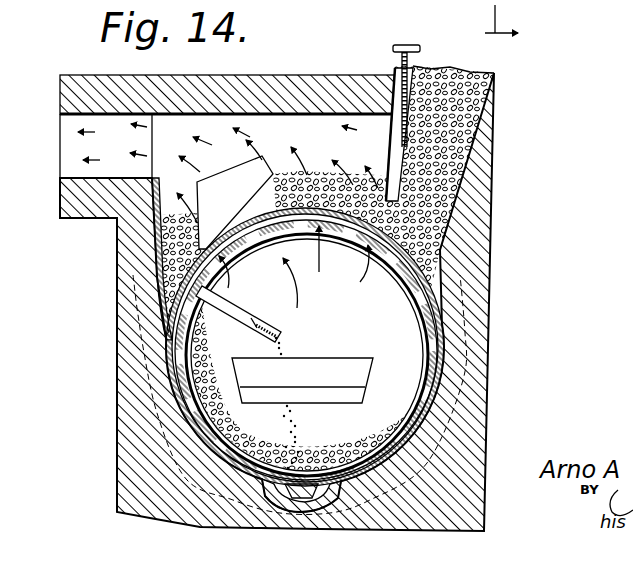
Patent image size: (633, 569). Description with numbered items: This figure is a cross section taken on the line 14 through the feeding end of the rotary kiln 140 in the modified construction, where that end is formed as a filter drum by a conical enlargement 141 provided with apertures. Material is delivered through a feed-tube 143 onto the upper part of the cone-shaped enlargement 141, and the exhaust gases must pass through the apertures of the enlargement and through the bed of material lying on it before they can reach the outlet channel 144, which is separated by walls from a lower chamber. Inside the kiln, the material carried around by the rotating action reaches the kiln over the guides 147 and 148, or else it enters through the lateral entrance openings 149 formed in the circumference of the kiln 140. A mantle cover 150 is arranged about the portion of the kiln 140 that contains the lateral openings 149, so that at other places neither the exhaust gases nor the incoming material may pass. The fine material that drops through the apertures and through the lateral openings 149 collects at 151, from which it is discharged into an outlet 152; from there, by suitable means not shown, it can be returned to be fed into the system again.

The section line 14 is at (518, 21).
The rotary kiln 140 is at (440, 340).
The conical enlargement 141 is at (284, 172).
The feed-tube 143 is at (487, 100).
The outlet channel 144 is at (74, 149).
The guide 147 is at (226, 309).
The guide 148 is at (323, 370).
The lateral entrance openings 149 is at (173, 350).
The mantle cover 150 is at (438, 385).
The collecting point for fine material 151 is at (302, 492).
The outlet 152 is at (312, 520).